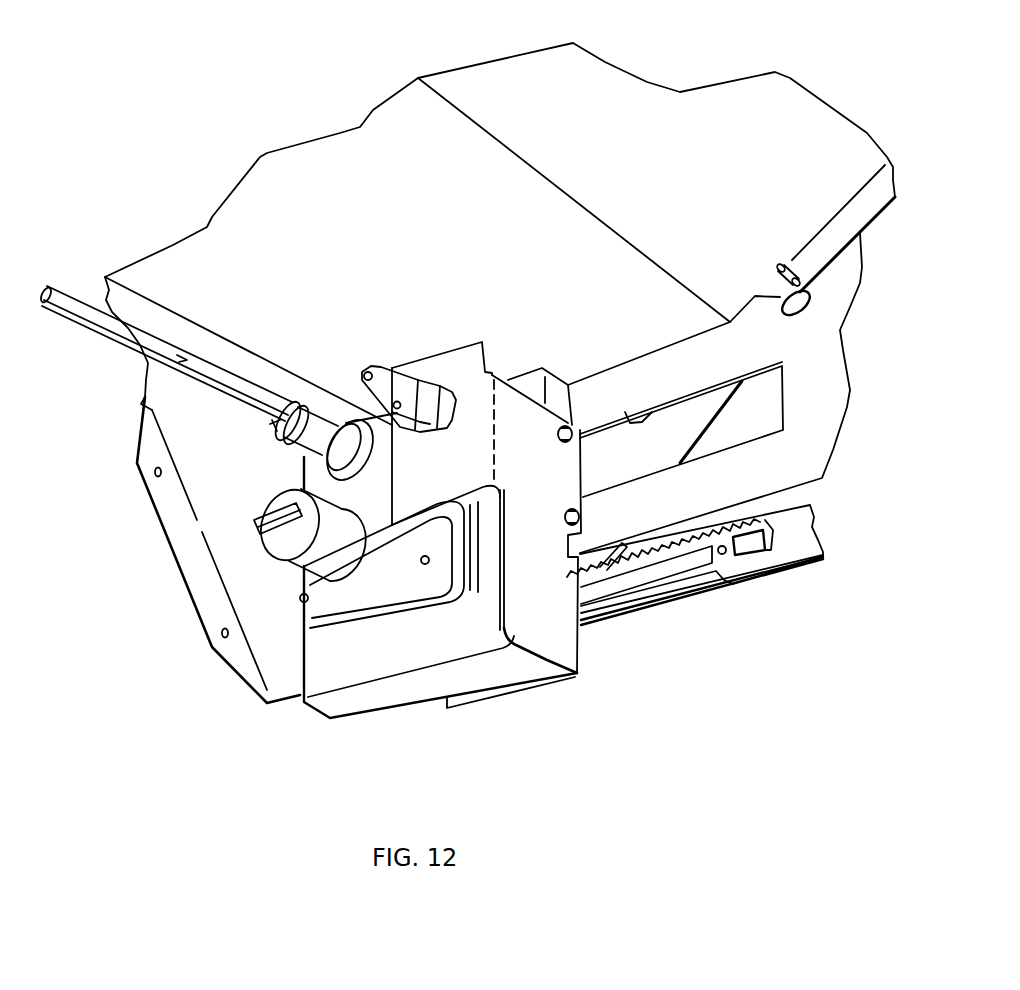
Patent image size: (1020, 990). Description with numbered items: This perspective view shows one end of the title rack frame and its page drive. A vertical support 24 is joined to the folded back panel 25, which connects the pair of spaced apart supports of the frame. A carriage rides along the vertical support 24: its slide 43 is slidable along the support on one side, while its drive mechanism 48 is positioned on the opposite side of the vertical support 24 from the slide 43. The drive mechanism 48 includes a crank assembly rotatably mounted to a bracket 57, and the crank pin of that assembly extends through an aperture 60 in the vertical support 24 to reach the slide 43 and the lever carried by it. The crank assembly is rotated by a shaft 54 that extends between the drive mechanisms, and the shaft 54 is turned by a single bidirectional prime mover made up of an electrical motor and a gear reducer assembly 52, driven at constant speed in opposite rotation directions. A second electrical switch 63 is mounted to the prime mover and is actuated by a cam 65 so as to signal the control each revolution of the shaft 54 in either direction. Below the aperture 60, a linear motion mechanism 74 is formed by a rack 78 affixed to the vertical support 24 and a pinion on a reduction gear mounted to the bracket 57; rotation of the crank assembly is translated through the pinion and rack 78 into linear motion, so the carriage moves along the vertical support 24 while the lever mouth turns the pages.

The folded back panel 25 is at (605, 62).
The vertical support 24 is at (832, 458).
The slide 43 is at (717, 422).
The aperture 60 is at (648, 410).
The drive mechanism 48 is at (578, 673).
The gear reducer assembly 52 is at (362, 627).
The bracket 57 is at (390, 698).
The shaft 54 is at (113, 345).
The cam 65 is at (347, 423).
The second electrical switch 63 is at (395, 370).
The linear motion mechanism 74 is at (655, 550).
The rack 78 is at (688, 582).